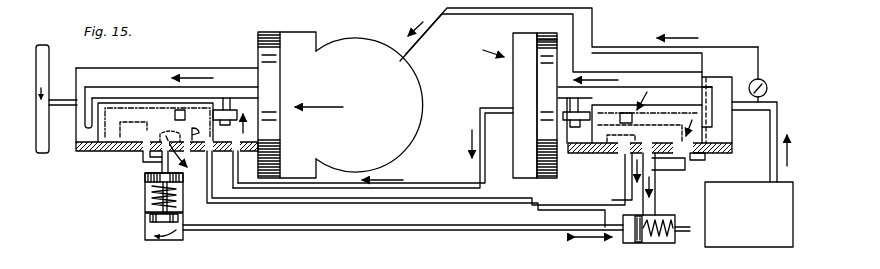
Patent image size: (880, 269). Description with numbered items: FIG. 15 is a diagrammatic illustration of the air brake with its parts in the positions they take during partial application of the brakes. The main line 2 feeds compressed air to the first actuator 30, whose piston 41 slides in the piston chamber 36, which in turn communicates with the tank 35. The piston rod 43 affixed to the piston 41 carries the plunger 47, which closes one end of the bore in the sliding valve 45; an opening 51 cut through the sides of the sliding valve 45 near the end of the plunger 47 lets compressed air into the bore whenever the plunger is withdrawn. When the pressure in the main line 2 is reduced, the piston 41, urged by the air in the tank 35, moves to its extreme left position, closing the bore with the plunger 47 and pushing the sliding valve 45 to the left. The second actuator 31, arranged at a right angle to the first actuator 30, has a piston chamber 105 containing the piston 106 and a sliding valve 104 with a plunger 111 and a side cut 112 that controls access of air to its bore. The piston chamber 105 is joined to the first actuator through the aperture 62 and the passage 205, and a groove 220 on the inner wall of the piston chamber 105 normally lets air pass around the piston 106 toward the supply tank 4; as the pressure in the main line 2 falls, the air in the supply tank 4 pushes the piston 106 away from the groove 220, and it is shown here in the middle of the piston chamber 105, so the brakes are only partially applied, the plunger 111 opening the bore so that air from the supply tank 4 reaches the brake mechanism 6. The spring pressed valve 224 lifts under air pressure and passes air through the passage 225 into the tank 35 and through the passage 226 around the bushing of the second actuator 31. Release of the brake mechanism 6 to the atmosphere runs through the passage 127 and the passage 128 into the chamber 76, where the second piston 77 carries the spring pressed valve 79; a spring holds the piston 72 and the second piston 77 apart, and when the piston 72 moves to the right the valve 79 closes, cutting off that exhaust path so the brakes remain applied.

The main line 2 is at (48, 55).
The first actuator 30 is at (205, 62).
The piston rod 43 is at (137, 88).
The sliding valve 45 is at (110, 103).
The opening 51 is at (180, 110).
The plunger 47 is at (225, 119).
The piston 72 is at (145, 178).
The third chamber 76 is at (172, 240).
The second piston 77 is at (150, 218).
The spring pressed valve 79 is at (150, 229).
The passage 128 is at (237, 228).
The aperture 62 is at (236, 150).
The passage 205 is at (424, 195).
The passage 127 is at (553, 190).
The piston 41 is at (270, 32).
The piston chamber 36 is at (297, 45).
The tank 35 is at (364, 43).
The passage 225 is at (596, 27).
The piston chamber 105 is at (517, 48).
The piston 106 is at (545, 72).
The groove 220 is at (544, 32).
The second actuator 31 is at (482, 49).
The sliding valve 104 is at (598, 104).
The cut 112 is at (626, 113).
The plunger 111 is at (575, 120).
The passage 226 is at (708, 63).
The brake mechanism 6 is at (652, 247).
The spring pressed valve 224 is at (766, 82).
The supply tank 4 is at (743, 244).